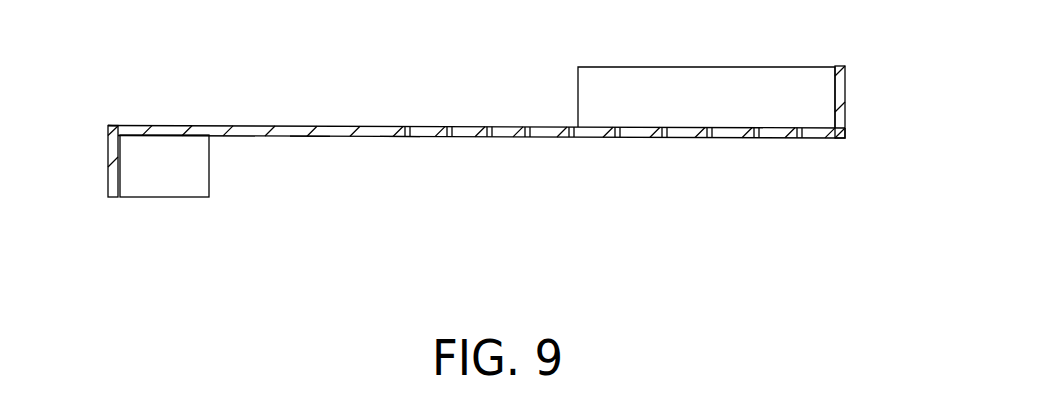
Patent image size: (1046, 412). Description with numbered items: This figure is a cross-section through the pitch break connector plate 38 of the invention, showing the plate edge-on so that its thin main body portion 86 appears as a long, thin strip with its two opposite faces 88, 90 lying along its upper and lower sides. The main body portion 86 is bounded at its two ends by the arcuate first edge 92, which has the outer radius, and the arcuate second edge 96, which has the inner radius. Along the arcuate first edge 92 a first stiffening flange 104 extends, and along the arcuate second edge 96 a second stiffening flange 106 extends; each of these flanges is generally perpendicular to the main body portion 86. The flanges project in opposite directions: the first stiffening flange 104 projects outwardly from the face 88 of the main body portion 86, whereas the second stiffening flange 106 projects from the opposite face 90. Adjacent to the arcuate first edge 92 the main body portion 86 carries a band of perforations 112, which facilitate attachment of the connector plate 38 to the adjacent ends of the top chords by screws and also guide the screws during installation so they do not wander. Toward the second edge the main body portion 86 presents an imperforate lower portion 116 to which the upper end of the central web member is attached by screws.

The pitch break connector plate 38 is at (465, 97).
The main body portion 86 is at (397, 137).
The face 88 is at (545, 127).
The face 90 is at (308, 137).
The arcuate first edge 92 is at (845, 138).
The arcuate second edge 96 is at (108, 125).
The first stiffening flange 104 is at (840, 92).
The second stiffening flange 106 is at (108, 173).
The perforations 112 is at (677, 178).
The imperforate lower portion 116 is at (198, 126).